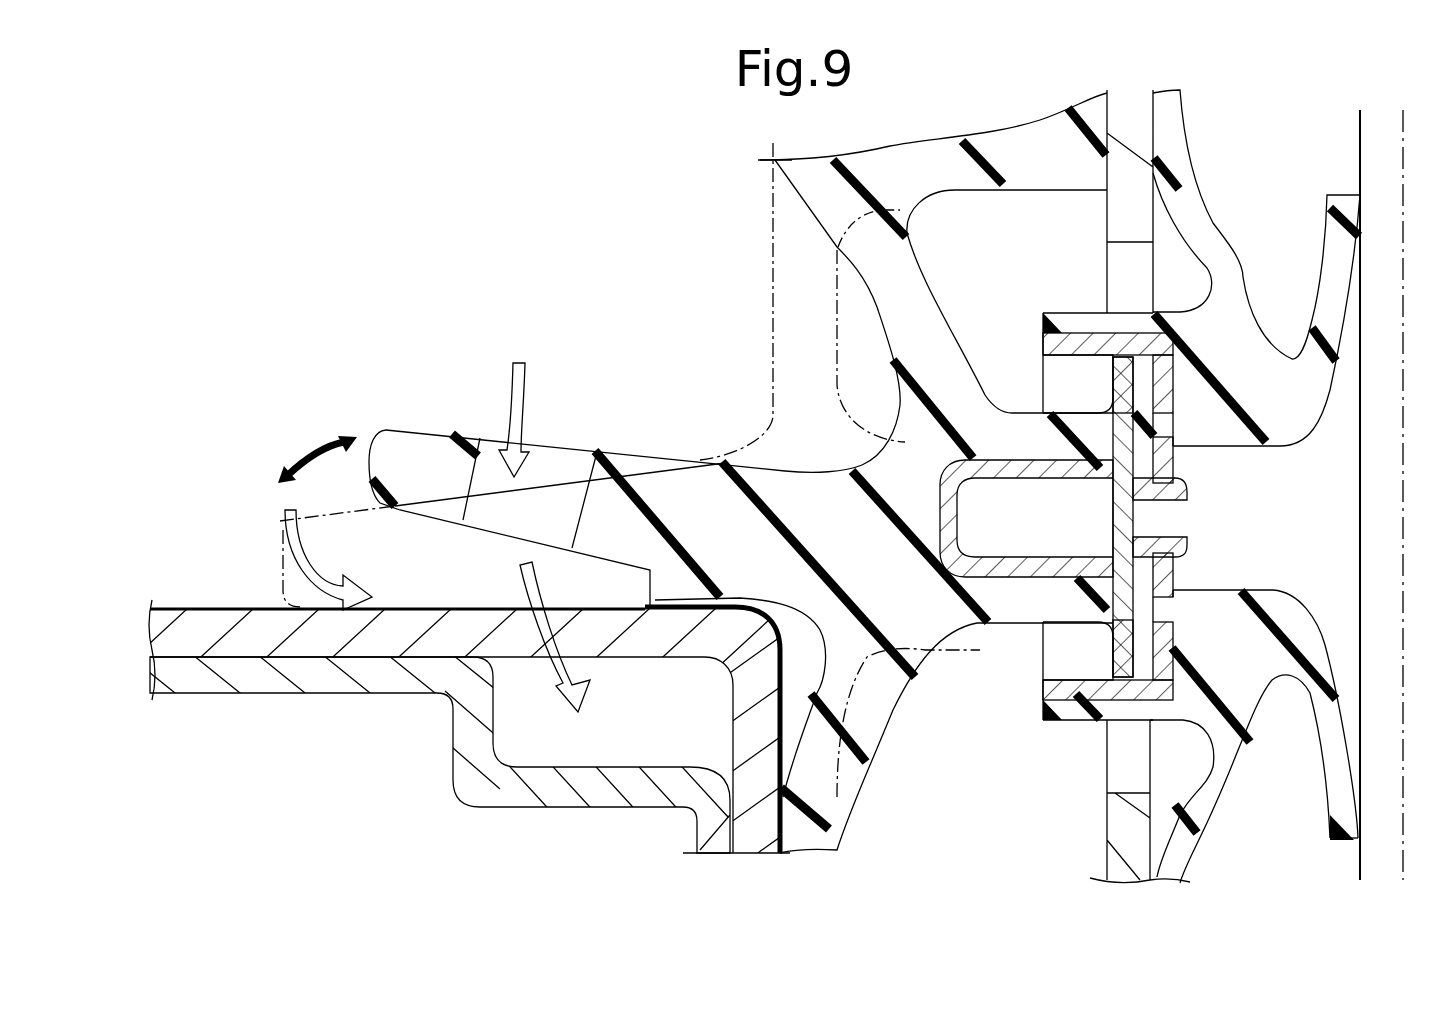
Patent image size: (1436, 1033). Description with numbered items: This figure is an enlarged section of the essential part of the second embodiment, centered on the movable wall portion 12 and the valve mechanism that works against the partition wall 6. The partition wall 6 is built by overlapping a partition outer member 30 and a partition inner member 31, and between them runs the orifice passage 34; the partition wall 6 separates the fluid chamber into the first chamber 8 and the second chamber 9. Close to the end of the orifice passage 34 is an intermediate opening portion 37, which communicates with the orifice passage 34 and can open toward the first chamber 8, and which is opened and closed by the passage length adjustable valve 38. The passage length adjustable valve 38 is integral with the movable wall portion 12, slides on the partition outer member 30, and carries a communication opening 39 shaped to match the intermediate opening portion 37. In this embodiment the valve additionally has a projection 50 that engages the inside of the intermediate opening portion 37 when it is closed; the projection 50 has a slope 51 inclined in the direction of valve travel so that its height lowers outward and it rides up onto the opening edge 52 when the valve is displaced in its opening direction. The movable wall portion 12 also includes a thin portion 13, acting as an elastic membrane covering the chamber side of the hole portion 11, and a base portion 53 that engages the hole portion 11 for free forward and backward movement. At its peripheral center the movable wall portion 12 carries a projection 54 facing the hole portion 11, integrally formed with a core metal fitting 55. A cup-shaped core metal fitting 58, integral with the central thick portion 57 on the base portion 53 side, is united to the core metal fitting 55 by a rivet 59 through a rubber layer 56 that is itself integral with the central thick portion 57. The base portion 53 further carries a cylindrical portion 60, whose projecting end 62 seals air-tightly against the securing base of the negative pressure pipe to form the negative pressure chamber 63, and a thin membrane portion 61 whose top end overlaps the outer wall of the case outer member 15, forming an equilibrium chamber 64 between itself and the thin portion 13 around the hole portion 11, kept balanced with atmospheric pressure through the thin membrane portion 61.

The partition wall 6 is at (173, 758).
The first chamber 8 is at (383, 322).
The second chamber 9 is at (345, 796).
The hole portion 11 is at (1107, 270).
The movable wall portion 12 is at (1000, 695).
The thin portion 13 is at (913, 298).
The case outer member 15 is at (1107, 213).
The partition outer member 30 is at (190, 645).
The partition inner member 31 is at (243, 678).
The orifice passage 34 is at (543, 747).
The intermediate opening portion 37 is at (553, 618).
The passage length adjustable valve 38 is at (693, 457).
The communication opening 39 is at (573, 468).
The projection 50 is at (645, 608).
The slope 51 is at (676, 592).
The opening edge 52 is at (672, 612).
The base portion 53 is at (1335, 420).
The projection 54 is at (1020, 428).
The core metal fitting 55 is at (1015, 465).
The rubber layer 56 is at (1147, 395).
The central thick portion 57 is at (1245, 432).
The cup-shaped core metal fitting 58 is at (1175, 463).
The rivet 59 is at (1175, 523).
The cylindrical portion 60 is at (1320, 327).
The thin membrane portion 61 is at (1190, 222).
The projecting end 62 is at (1350, 203).
The negative pressure chamber 63 is at (1336, 522).
The equilibrium chamber 64 is at (1010, 243).